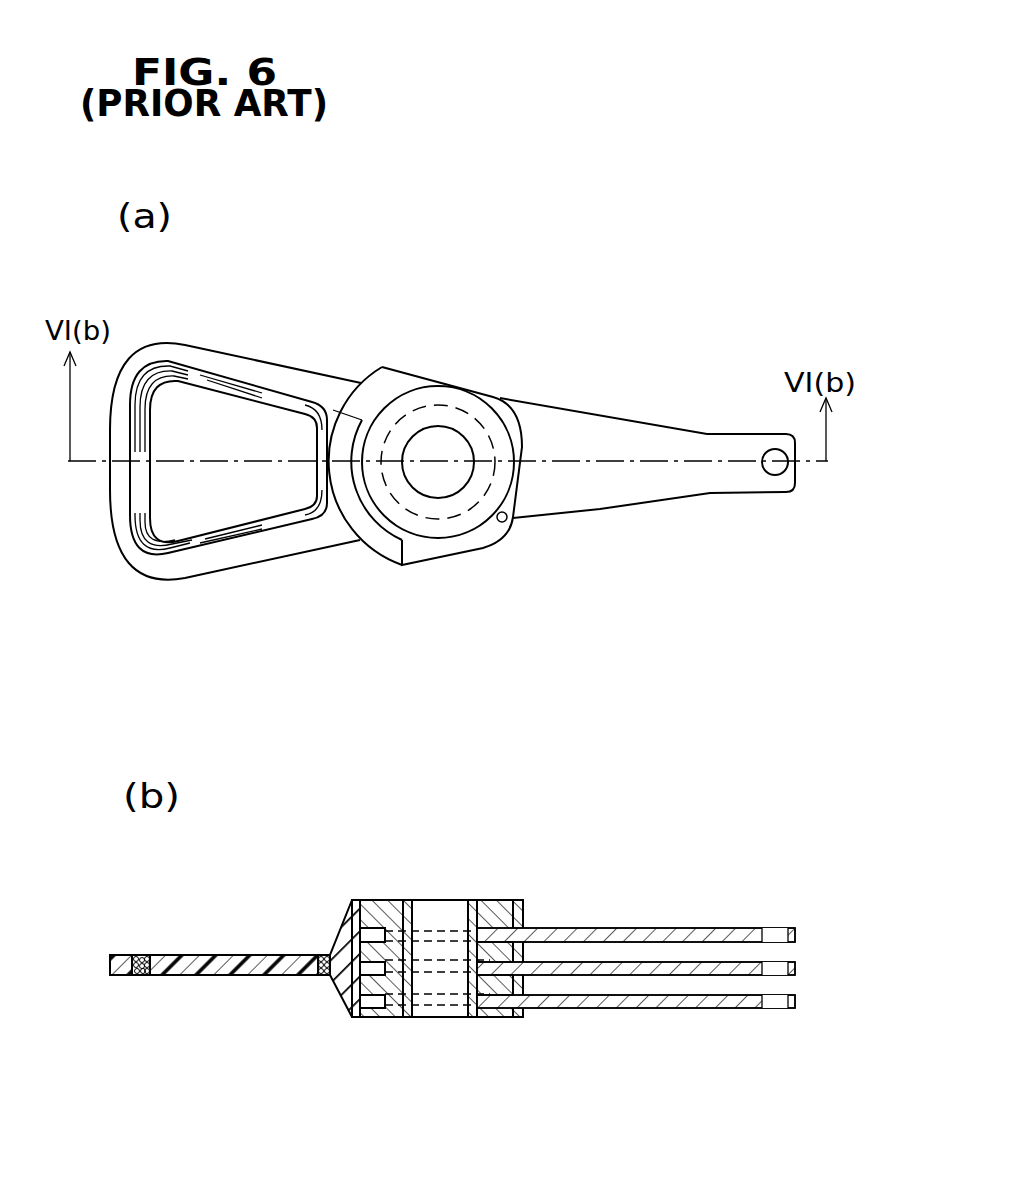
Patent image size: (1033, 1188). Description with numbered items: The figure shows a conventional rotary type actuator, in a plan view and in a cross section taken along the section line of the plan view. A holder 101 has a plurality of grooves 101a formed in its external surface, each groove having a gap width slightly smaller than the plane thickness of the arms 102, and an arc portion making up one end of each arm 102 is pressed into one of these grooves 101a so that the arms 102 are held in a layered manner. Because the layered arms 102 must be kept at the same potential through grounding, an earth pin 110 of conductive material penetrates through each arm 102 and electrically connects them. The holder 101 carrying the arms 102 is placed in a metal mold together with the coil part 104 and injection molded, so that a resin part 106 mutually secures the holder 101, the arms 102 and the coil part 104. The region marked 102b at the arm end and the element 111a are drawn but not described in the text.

The holder 101 is at (497, 407).
The grooves 101a is at (547, 930).
The arms 102 is at (628, 433).
The hole 102b is at (763, 455).
The coil part 104 is at (317, 520).
The resin part 106 is at (408, 382).
The earth pin 110 is at (505, 523).
The inner sleeve 111a is at (418, 980).